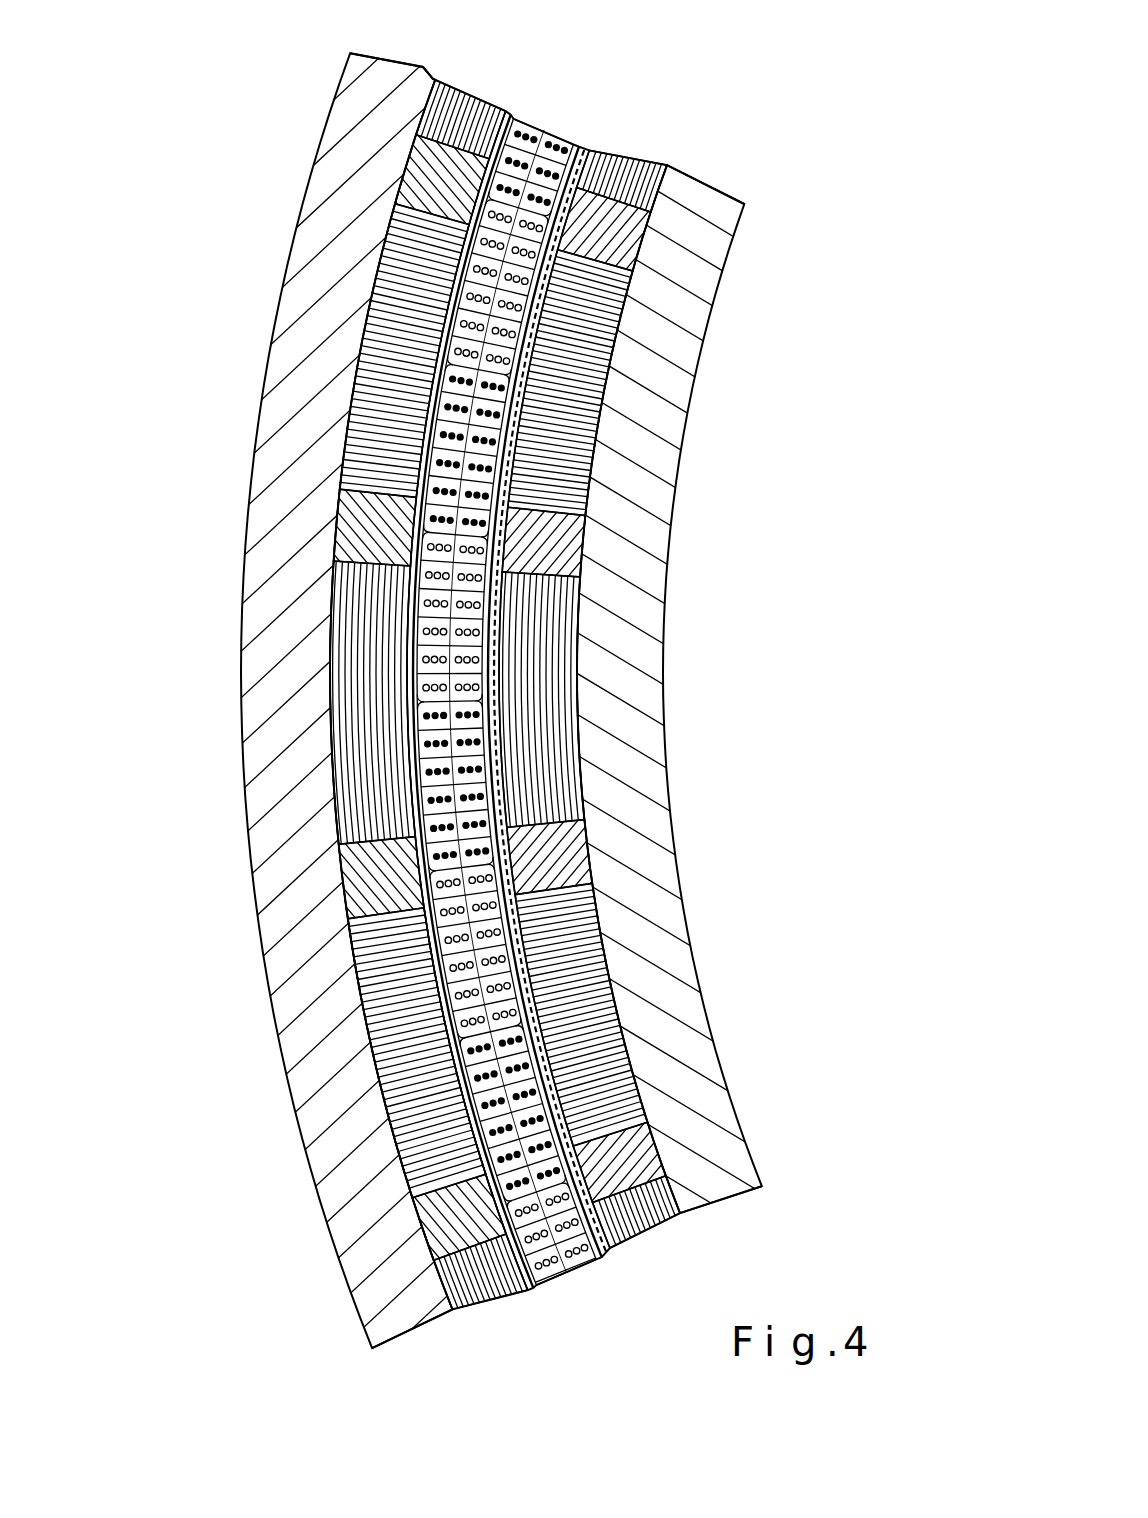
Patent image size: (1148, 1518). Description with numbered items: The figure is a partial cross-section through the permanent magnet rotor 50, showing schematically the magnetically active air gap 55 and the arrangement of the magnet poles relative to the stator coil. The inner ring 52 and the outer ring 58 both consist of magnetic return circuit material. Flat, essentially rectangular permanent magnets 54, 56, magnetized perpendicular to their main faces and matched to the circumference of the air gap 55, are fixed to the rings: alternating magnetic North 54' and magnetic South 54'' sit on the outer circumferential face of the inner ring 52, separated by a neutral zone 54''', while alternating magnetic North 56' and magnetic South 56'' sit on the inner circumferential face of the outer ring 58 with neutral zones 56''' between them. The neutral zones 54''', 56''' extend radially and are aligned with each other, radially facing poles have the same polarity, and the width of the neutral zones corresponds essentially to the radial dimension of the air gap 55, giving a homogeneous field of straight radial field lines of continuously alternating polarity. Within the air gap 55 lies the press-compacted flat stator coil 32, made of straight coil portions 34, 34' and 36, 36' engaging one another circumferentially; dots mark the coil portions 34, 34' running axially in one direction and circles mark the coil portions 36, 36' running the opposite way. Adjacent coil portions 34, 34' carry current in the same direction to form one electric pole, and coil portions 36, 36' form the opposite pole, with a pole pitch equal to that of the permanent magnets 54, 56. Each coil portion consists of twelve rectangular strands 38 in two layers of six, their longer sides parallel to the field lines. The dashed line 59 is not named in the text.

The stator coil 32 is at (506, 671).
The coil portion 34 is at (362, 701).
The coil portion 34' is at (353, 700).
The coil portion 36 is at (321, 1090).
The coil portion 36' is at (379, 1071).
The strand 38 is at (556, 1283).
The permanent magnet rotor 50 is at (438, 700).
The inner ring 52 is at (574, 707).
The permanent magnet 54 is at (613, 692).
The magnetic North 54' is at (615, 699).
The magnetic South 54'' is at (635, 698).
The neutral zone 54''' is at (642, 694).
The air gap 55 is at (560, 660).
The permanent magnet 56 is at (341, 699).
The magnetic North 56' is at (285, 702).
The magnetic South 56'' is at (329, 701).
The neutral zone 56''' is at (348, 695).
The outer ring 58 is at (574, 759).
The separating layer 59 is at (582, 676).